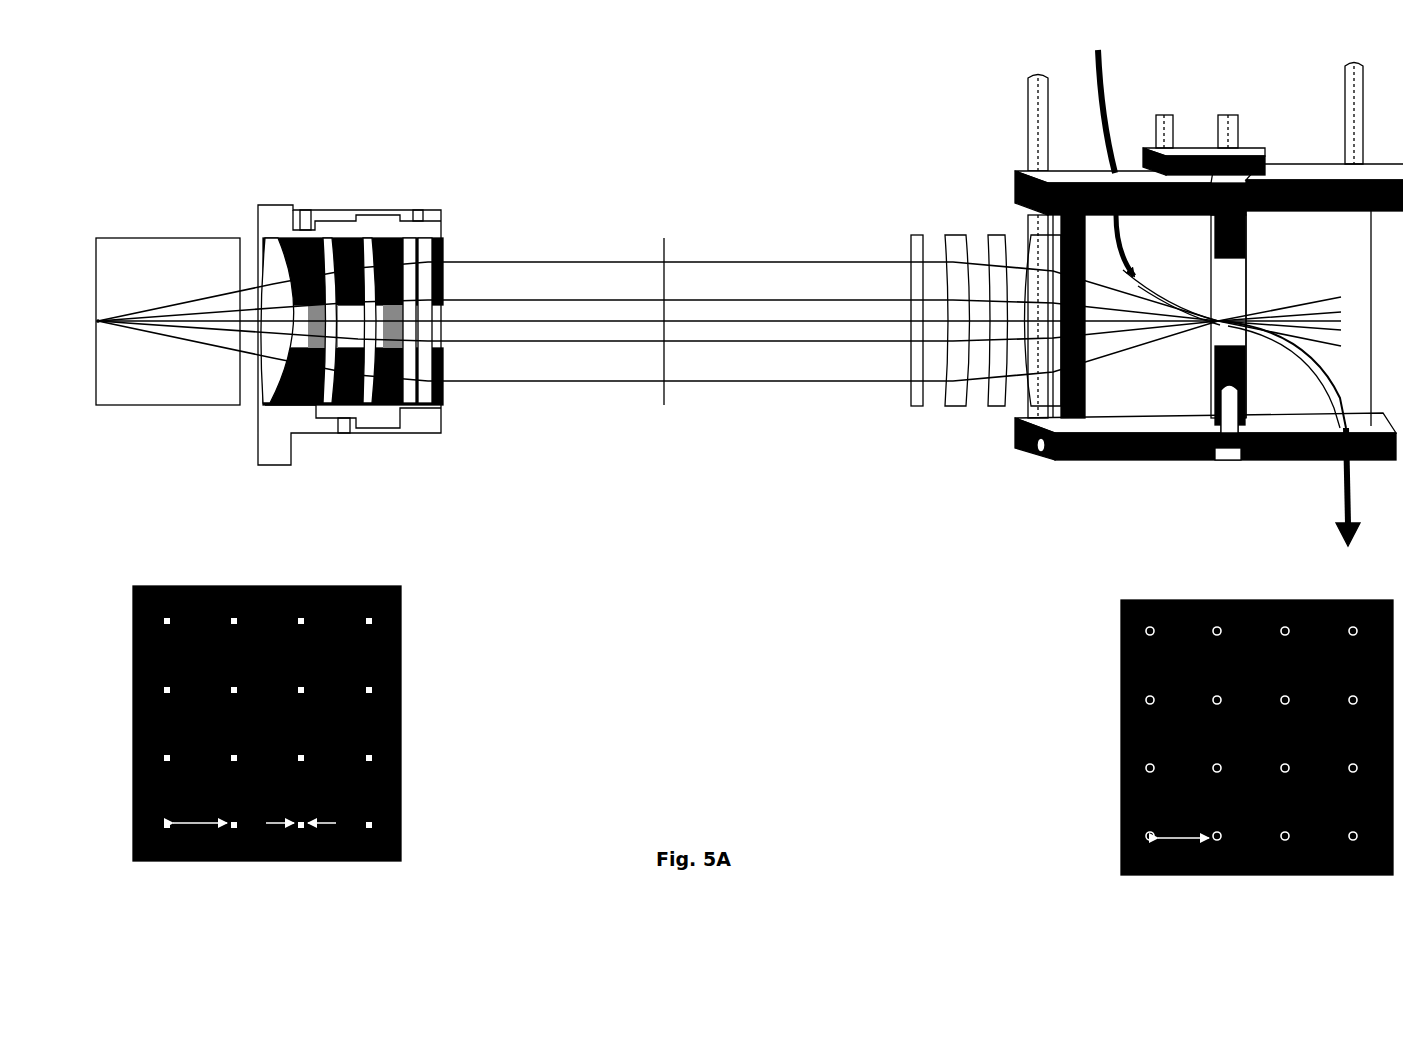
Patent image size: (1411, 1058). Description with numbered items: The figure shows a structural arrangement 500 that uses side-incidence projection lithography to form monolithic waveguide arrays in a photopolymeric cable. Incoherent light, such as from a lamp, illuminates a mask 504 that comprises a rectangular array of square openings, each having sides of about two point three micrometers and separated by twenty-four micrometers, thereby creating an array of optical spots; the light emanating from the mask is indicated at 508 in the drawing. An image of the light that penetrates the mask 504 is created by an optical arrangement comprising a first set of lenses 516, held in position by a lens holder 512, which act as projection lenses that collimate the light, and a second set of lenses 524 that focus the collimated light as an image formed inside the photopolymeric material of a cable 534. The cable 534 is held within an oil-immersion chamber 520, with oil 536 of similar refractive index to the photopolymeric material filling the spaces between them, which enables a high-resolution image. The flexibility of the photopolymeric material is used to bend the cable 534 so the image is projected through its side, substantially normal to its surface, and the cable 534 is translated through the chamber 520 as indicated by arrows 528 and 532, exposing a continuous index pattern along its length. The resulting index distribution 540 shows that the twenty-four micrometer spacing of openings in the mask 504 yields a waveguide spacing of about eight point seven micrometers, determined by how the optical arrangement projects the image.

The structural arrangement 500 is at (644, 200).
The mask 504 is at (183, 400).
The light source point 508 is at (90, 313).
The lens holder 512 is at (430, 405).
The first set of lenses 516 is at (370, 311).
The chamber 520 is at (1116, 449).
The second set of lenses 524 is at (1049, 220).
The arrow 528 is at (1100, 97).
The arrow 532 is at (1346, 475).
The cable 534 is at (1136, 282).
The oil 536 is at (1209, 248).
The index distribution 540 is at (1112, 681).